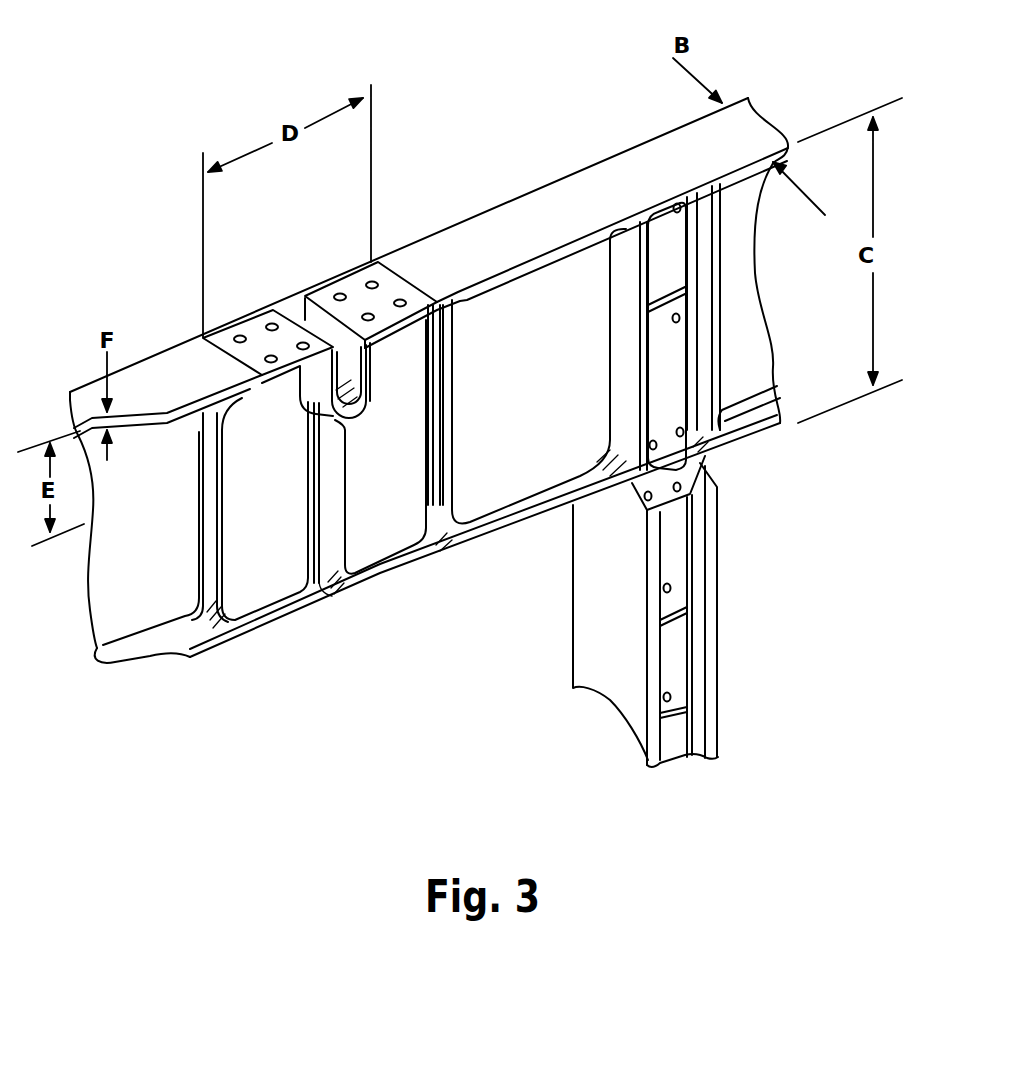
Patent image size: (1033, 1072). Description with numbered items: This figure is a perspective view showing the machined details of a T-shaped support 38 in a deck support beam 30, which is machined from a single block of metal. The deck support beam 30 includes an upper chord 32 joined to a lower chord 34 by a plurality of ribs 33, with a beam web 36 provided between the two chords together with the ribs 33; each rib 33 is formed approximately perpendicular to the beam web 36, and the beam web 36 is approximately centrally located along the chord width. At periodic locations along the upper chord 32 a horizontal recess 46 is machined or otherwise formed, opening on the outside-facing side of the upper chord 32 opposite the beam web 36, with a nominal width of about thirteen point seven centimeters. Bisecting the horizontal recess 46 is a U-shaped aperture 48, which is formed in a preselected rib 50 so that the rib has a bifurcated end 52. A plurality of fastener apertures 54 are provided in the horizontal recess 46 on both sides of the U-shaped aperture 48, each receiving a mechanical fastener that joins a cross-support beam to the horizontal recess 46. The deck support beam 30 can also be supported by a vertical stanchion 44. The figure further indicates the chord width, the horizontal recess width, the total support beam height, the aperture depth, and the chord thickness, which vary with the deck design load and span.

The deck support beam 30 is at (542, 165).
The upper chord 32 is at (625, 195).
The ribs 33 is at (215, 602).
The lower chord 34 is at (532, 513).
The beam web 36 is at (377, 507).
The T-shaped support 38 is at (296, 308).
The vertical stanchion 44 is at (598, 642).
The horizontal recess 46 is at (358, 290).
The U-shaped aperture 48 is at (353, 368).
The preselected rib 50 is at (327, 557).
The bifurcated end 52 is at (337, 423).
The fastener apertures 54 is at (272, 325).